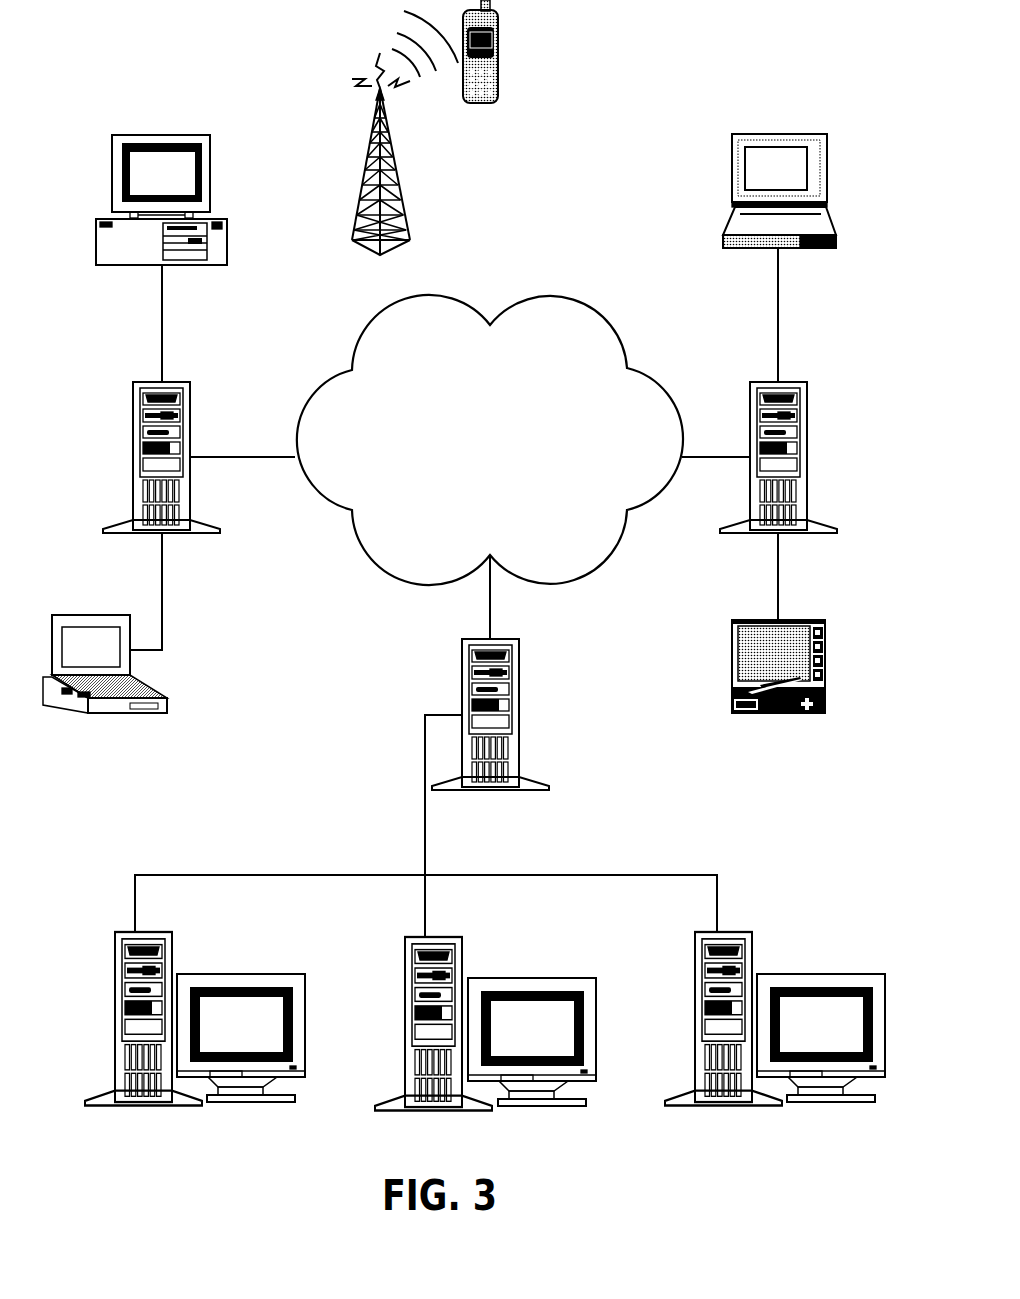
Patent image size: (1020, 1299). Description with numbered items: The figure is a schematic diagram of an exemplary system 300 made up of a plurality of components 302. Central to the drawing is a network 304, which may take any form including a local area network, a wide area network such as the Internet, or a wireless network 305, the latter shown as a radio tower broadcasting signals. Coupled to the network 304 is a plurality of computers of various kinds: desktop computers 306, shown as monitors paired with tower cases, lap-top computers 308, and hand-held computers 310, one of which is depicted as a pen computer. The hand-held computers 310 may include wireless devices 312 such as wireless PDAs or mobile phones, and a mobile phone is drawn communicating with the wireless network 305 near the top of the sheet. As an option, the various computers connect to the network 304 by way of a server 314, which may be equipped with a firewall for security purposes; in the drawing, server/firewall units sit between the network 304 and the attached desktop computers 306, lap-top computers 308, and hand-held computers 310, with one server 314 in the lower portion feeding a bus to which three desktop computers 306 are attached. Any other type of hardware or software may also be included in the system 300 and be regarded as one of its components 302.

The system 300 is at (715, 78).
The plurality of components 302 is at (328, 762).
The network 304 is at (543, 297).
The wireless network 305 is at (370, 152).
The desktop computers 306 is at (227, 235).
The lap-top computers 308 is at (727, 232).
The hand-held computers 310 is at (730, 665).
The wireless devices 312 is at (498, 32).
The server 314 is at (518, 715).